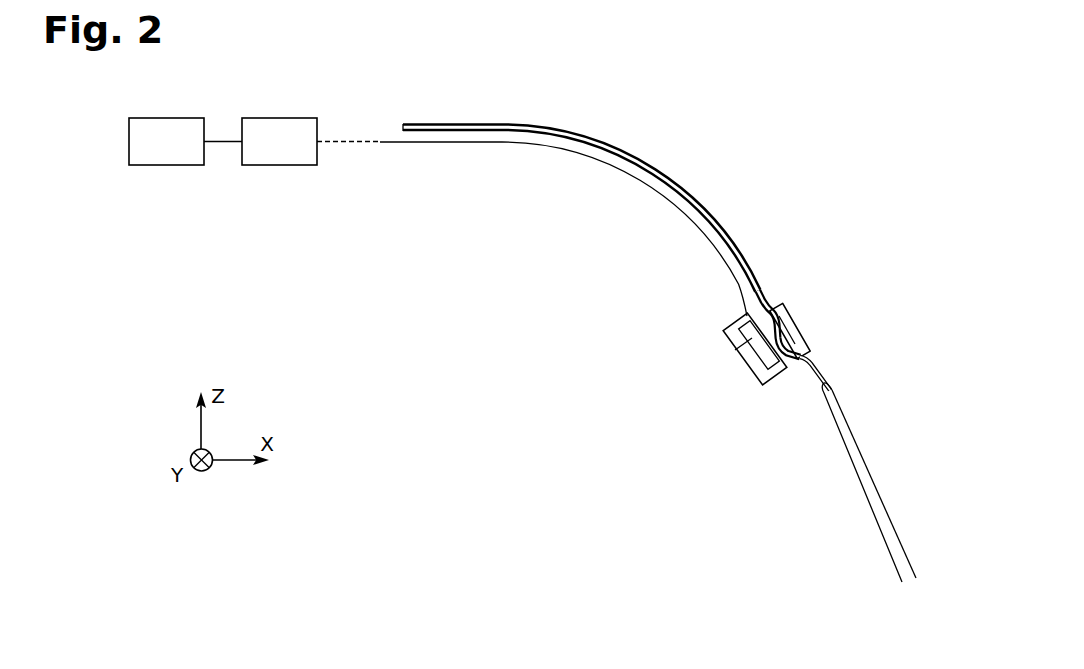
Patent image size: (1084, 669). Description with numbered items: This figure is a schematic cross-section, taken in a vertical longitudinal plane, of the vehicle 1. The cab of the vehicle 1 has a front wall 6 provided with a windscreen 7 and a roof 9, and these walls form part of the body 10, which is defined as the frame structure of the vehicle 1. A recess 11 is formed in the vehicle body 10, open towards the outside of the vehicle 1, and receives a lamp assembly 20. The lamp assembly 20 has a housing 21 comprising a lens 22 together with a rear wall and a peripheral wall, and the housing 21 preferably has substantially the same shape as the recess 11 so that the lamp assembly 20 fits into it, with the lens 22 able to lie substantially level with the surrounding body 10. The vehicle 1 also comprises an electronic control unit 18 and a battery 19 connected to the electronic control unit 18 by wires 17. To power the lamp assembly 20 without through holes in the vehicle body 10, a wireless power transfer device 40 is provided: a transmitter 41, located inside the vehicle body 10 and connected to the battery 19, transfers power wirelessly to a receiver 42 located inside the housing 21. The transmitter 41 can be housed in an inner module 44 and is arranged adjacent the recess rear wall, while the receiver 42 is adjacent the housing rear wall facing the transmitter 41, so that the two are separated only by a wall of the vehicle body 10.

The vehicle 1 is at (648, 331).
The front wall 6 is at (564, 188).
The windscreen 7 is at (876, 508).
The roof 9 is at (436, 125).
The body 10 is at (564, 188).
The recess 11 is at (763, 299).
The wires 17 is at (528, 143).
The electronic control unit 18 is at (292, 152).
The battery 19 is at (179, 152).
The lamp assembly 20 is at (848, 302).
The housing 21 is at (819, 337).
The lens 22 is at (783, 304).
The wireless power transfer device 40 is at (736, 376).
The transmitter 41 is at (724, 356).
The receiver 42 is at (771, 365).
The inner module 44 is at (728, 324).